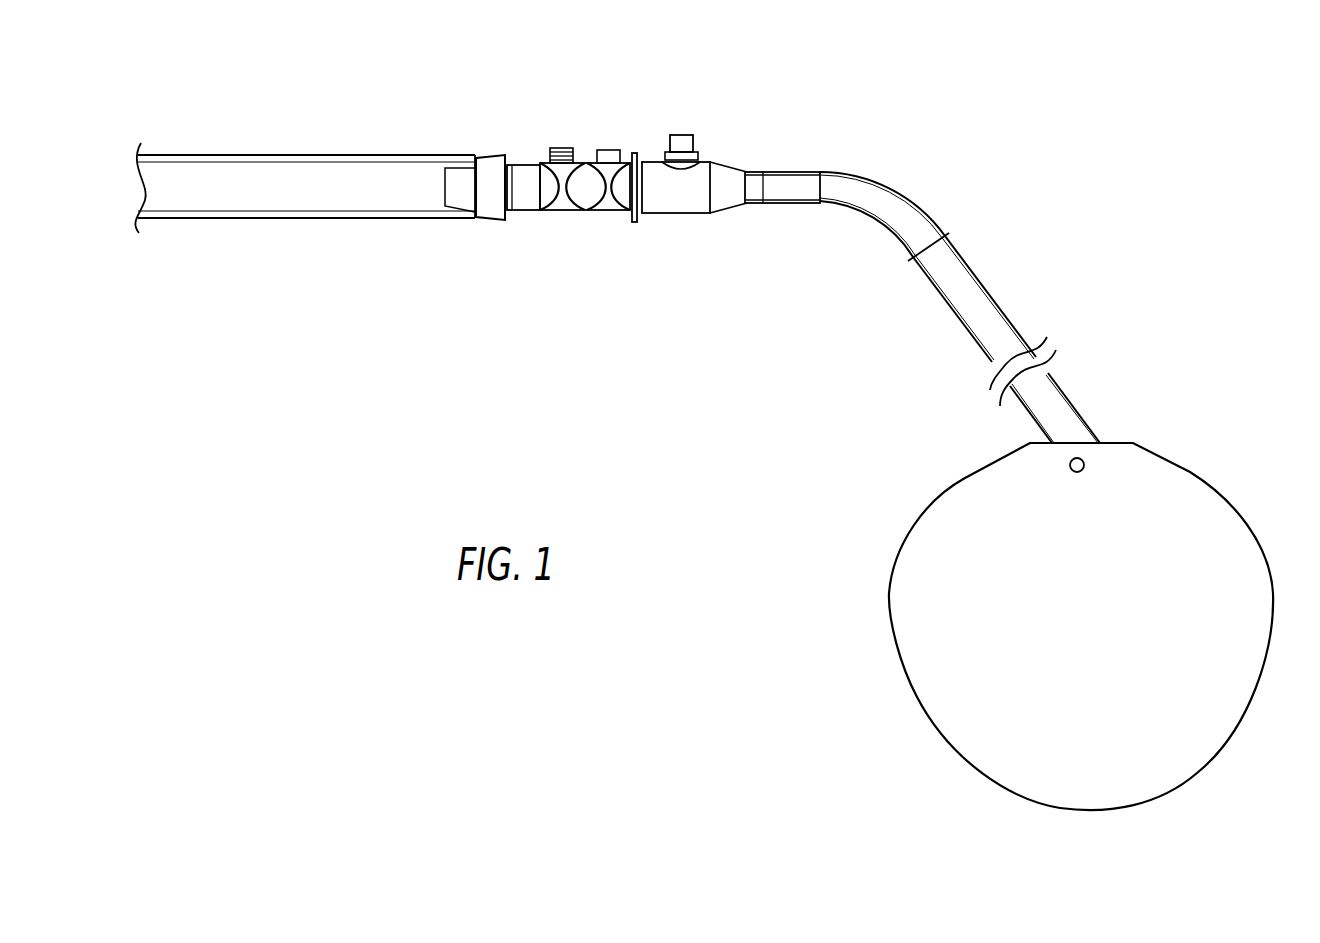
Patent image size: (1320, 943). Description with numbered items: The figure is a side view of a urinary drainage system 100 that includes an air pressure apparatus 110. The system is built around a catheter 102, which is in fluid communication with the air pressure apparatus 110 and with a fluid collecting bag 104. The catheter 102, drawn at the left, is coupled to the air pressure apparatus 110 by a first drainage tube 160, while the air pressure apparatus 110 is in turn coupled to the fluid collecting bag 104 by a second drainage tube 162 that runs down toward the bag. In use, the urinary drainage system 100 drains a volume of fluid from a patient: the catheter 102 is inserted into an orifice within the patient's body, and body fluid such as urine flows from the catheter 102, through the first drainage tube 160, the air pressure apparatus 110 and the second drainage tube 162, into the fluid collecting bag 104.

The urinary drainage system 100 is at (909, 135).
The catheter 102 is at (241, 220).
The fluid collecting bag 104 is at (1190, 475).
The air pressure apparatus 110 is at (630, 122).
The first drainage tube 160 is at (349, 188).
The second drainage tube 162 is at (998, 302).